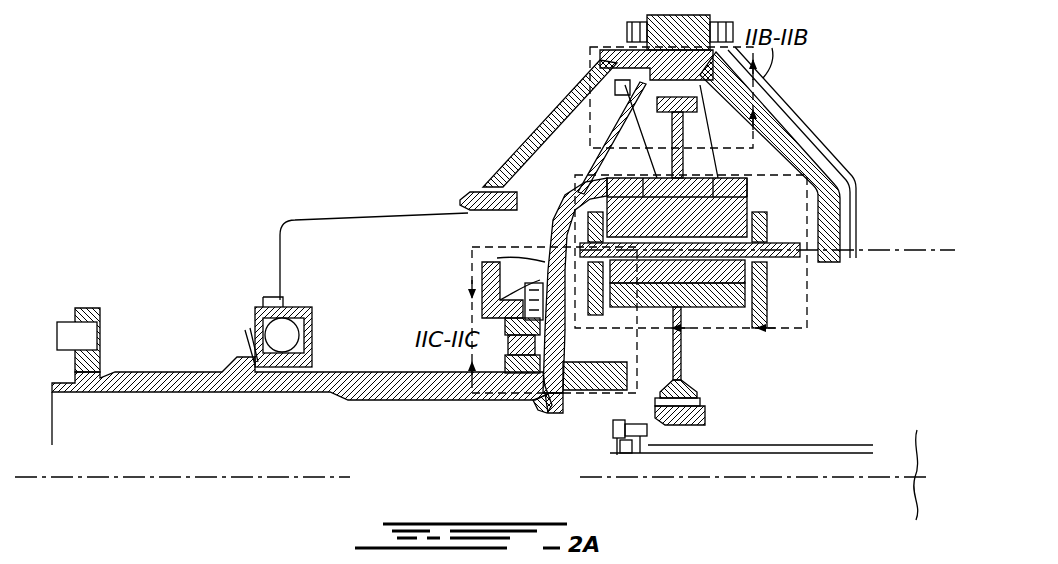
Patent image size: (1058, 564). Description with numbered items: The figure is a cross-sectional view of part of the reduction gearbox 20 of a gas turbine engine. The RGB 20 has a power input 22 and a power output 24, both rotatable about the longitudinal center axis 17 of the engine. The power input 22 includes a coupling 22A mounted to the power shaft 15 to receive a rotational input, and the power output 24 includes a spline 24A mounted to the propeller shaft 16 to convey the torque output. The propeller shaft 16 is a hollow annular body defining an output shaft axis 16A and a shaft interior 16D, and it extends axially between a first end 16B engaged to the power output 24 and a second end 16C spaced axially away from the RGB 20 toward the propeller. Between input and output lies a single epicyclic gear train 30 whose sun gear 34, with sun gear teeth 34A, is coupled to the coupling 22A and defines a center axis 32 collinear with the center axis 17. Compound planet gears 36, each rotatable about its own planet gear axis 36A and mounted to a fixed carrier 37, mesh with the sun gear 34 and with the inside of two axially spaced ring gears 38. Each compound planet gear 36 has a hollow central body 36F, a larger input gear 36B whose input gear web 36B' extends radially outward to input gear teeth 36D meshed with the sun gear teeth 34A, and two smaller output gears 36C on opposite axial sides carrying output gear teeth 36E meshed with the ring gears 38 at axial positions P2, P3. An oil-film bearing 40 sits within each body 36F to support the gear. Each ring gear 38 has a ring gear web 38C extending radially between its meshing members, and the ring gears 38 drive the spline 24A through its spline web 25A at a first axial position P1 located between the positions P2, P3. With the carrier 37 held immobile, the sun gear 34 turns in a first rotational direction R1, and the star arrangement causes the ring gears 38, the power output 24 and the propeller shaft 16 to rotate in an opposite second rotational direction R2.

The propeller shaft 16 is at (172, 372).
The second end of the propeller shaft 16C is at (80, 298).
The shaft interior 16D is at (243, 441).
The output shaft axis 16A is at (133, 479).
The first end of the propeller shaft 16B is at (522, 414).
The second rotational direction R2 is at (372, 412).
The power output 24 is at (543, 422).
The spline 24A is at (551, 233).
The spline web 25A is at (540, 263).
The compound planet gear 36 is at (658, 143).
The output gear 36C is at (595, 204).
The input gear teeth 36D is at (662, 393).
The output gear teeth 36E is at (769, 280).
The central body 36F is at (769, 224).
The carrier 37 is at (769, 300).
The oil-film bearing 40 is at (769, 268).
The planet gear axis 36A is at (917, 249).
The epicyclic gear train 30 is at (797, 318).
The input gear web 36B' is at (757, 343).
The input gear 36B is at (721, 378).
The sun gear teeth 34A is at (700, 402).
The sun gear 34 is at (705, 415).
The power input 22 is at (605, 432).
The coupling 22A is at (630, 456).
The power shaft 15 is at (804, 445).
The first rotational direction R1 is at (862, 395).
The longitudinal center axis 17 is at (926, 464).
The center axis of the epicyclic gear train 32 is at (754, 514).
The reduction gearbox 20 is at (797, 110).
The first axial position P1 is at (595, 62).
The axial position P2 is at (595, 182).
The axial position P3 is at (742, 166).
The ring gear 38 is at (592, 180).
The ring gear web 38C is at (650, 140).